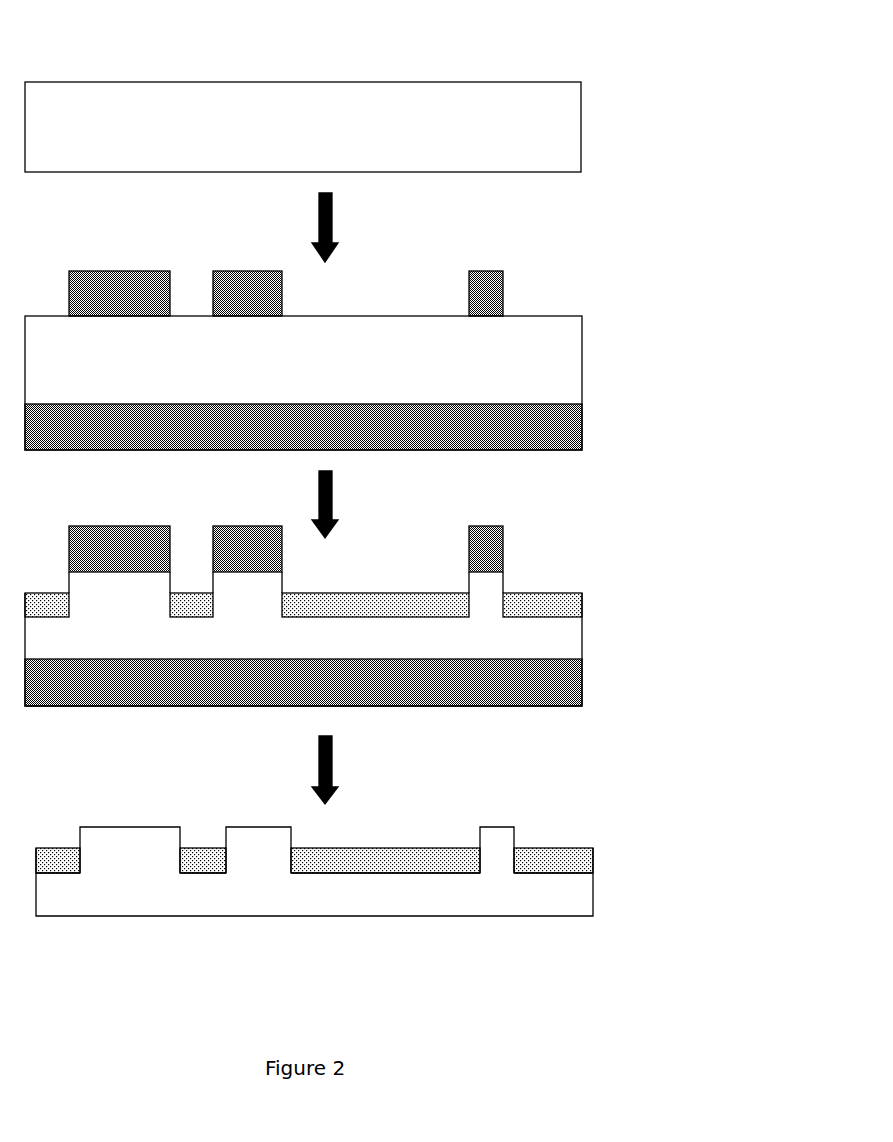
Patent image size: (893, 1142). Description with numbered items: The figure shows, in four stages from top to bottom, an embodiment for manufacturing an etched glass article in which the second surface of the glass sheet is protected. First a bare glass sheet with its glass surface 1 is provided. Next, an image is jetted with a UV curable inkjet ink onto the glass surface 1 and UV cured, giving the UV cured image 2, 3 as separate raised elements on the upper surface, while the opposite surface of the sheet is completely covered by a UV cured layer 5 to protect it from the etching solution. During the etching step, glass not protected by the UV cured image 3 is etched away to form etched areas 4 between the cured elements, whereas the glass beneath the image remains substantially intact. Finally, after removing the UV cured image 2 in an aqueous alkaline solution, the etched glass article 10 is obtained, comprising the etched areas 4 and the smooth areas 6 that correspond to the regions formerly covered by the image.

The glass surface 1 is at (413, 82).
The UV cured image 2 is at (283, 292).
The UV cured image 3 is at (201, 312).
The etched areas 4 is at (410, 504).
The UV cured layer 5 is at (480, 438).
The smooth areas 6 is at (244, 827).
The etched glass article 10 is at (158, 893).